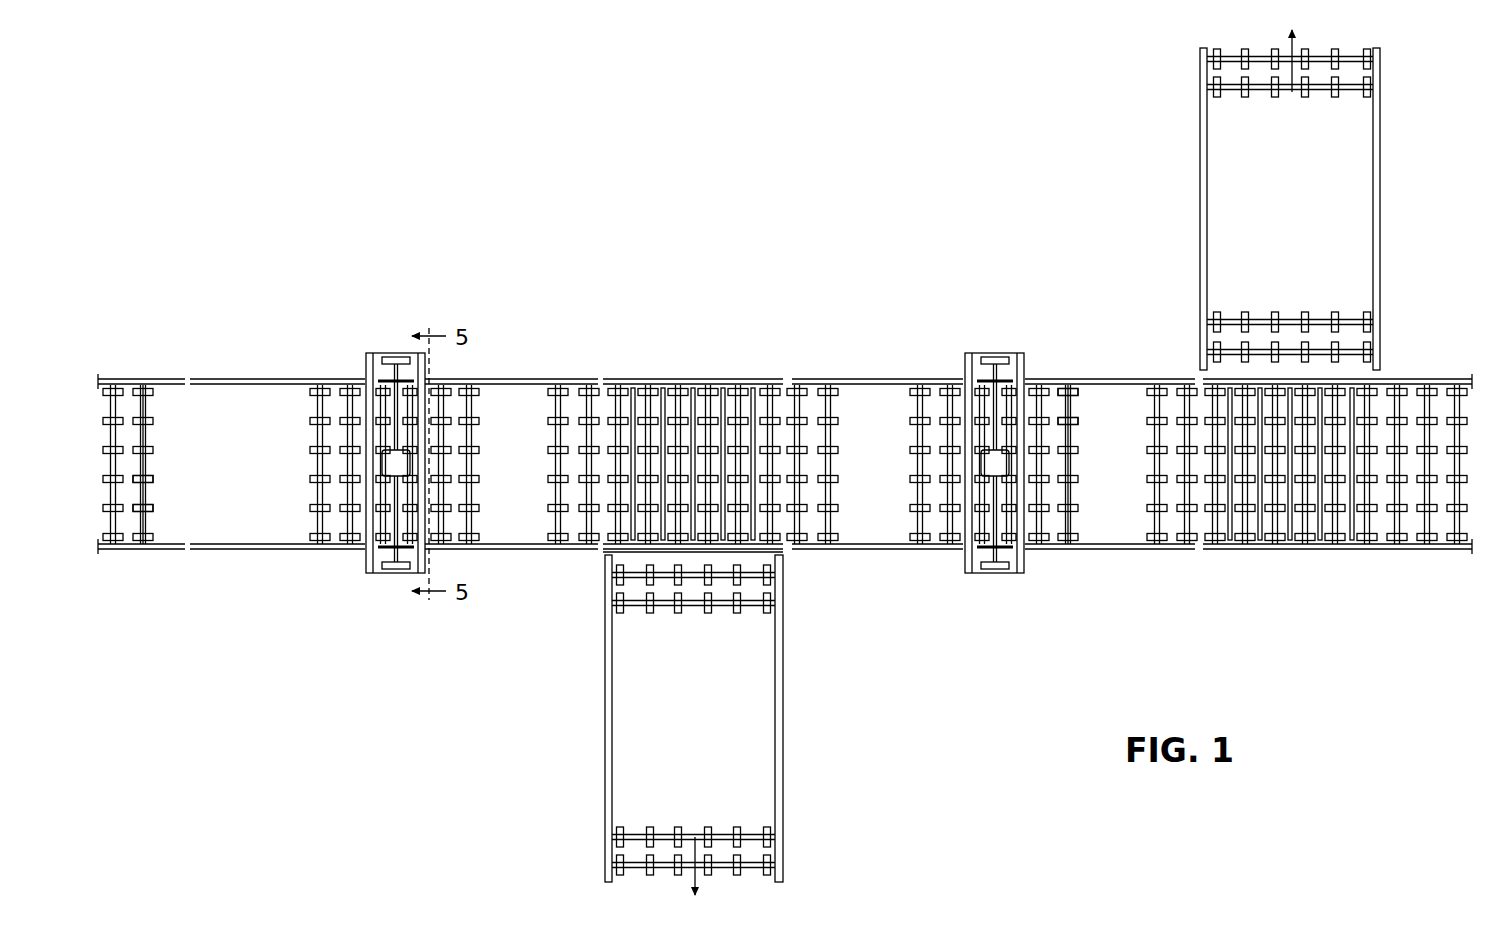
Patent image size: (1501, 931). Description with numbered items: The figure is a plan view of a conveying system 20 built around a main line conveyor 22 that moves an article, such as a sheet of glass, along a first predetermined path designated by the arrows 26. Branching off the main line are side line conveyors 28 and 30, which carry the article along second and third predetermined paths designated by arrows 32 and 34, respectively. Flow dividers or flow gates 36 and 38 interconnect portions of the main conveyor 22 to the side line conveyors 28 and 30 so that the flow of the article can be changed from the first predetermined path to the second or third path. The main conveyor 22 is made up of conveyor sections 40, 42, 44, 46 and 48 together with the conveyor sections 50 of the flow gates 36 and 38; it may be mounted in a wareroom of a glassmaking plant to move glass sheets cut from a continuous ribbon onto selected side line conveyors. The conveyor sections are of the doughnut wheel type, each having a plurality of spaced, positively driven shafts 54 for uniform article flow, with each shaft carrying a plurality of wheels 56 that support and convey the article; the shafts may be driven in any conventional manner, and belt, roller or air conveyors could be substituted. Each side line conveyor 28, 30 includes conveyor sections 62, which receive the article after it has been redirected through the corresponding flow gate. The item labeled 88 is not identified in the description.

The conveying system 20 is at (947, 285).
The main line conveyor 22 is at (697, 358).
The arrows 26 is at (140, 462).
The side line conveyor 28 is at (805, 746).
The side line conveyor 30 is at (1403, 215).
The arrows 32 is at (692, 880).
The arrows 34 is at (1294, 46).
The flow gate 36 is at (452, 370).
The flow gate 38 is at (1055, 366).
The conveyor section 40 is at (127, 370).
The conveyor section 42 is at (520, 378).
The conveyor section 44 is at (642, 370).
The conveyor section 46 is at (1115, 372).
The conveyor section 48 is at (1418, 368).
The conveyor sections of the flow gates 50 is at (298, 375).
The shafts 54 is at (146, 409).
The wheels 56 is at (150, 507).
The conveyor sections 62 is at (1387, 100).
The transfer mechanism 88 is at (397, 340).